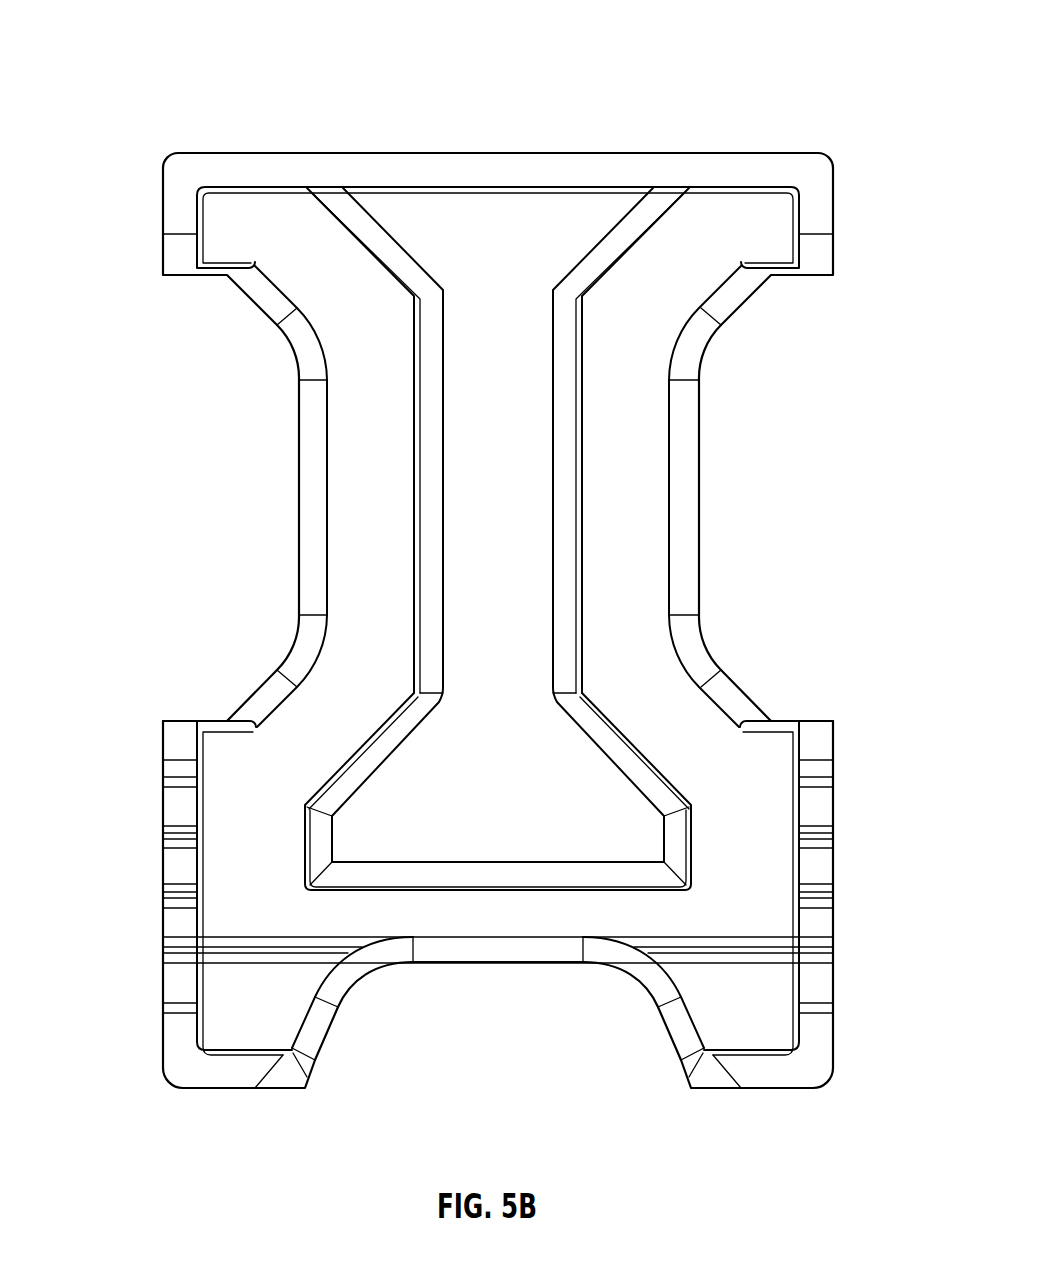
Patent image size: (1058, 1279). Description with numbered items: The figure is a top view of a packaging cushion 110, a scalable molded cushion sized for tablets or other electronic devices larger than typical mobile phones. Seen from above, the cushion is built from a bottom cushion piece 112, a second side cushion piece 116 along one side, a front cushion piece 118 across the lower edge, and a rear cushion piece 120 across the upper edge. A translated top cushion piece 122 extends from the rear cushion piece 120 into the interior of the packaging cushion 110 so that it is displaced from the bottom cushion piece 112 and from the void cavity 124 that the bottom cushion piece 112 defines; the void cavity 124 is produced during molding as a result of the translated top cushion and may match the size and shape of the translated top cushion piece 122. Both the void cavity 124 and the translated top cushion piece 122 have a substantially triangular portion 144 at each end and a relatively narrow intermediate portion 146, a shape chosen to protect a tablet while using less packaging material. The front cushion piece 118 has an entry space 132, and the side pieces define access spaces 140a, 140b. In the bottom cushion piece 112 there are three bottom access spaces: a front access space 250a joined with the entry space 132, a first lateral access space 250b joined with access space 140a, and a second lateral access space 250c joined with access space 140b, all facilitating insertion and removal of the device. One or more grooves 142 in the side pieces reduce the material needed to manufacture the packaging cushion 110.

The packaging cushion 110 is at (797, 37).
The bottom cushion piece 112 is at (280, 210).
The second side cushion piece 116 is at (830, 743).
The front cushion piece 118 is at (753, 1090).
The rear cushion piece 120 is at (750, 153).
The translated top cushion piece 122 is at (562, 340).
The void cavity 124 is at (362, 740).
The entry space 132 is at (453, 940).
The access space 140a is at (275, 542).
The access space 140b is at (707, 498).
The grooves 142 is at (168, 818).
The substantially triangular portion 144 is at (555, 192).
The intermediate portion 146 is at (447, 237).
The front access space 250a is at (500, 980).
The first lateral access space 250b is at (250, 477).
The second lateral access space 250c is at (718, 433).